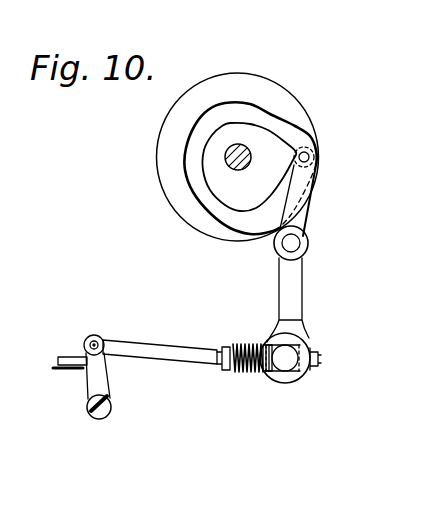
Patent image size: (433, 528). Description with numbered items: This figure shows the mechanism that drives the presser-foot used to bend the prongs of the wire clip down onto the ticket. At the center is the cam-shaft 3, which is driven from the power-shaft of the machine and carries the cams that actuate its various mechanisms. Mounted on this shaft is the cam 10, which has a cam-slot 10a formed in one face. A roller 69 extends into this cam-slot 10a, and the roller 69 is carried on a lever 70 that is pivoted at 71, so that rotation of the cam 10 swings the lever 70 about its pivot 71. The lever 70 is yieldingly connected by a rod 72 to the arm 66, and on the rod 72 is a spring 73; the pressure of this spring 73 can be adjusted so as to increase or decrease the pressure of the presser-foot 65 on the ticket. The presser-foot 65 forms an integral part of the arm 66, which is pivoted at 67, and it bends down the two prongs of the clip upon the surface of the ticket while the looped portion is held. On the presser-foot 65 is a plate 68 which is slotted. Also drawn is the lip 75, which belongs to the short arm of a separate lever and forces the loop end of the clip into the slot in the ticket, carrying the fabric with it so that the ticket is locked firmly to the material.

The cam 10 is at (258, 76).
The cam-slot 10a is at (237, 108).
The cam-shaft 3 is at (251, 157).
The roller 69 is at (314, 157).
The lever 70 is at (306, 203).
The pivot 71 is at (300, 243).
The rod 72 is at (195, 348).
The spring 73 is at (244, 358).
The lip 75 is at (233, 372).
The presser-foot 65 is at (70, 357).
The arm 66 is at (108, 391).
The pivot 67 is at (107, 414).
The plate 68 is at (57, 369).